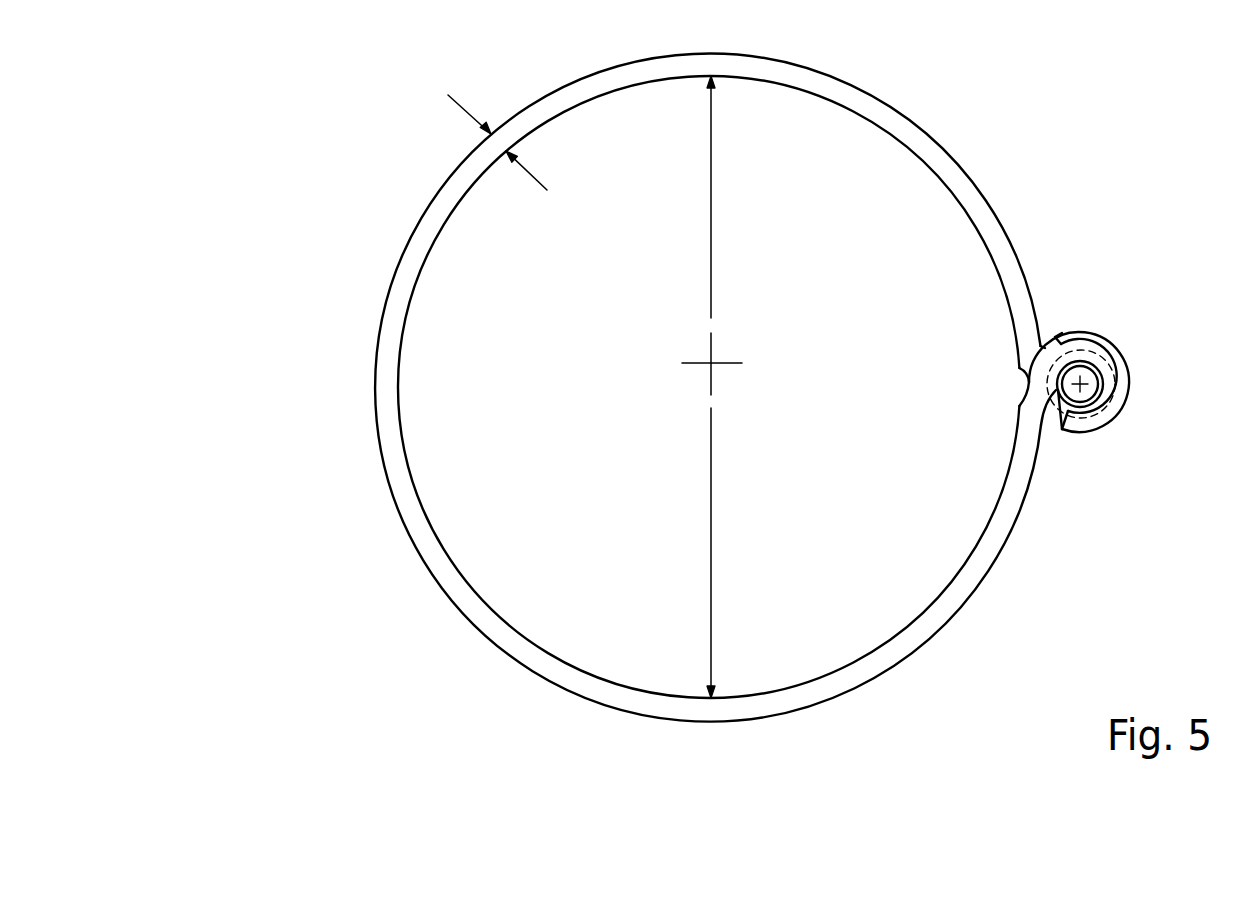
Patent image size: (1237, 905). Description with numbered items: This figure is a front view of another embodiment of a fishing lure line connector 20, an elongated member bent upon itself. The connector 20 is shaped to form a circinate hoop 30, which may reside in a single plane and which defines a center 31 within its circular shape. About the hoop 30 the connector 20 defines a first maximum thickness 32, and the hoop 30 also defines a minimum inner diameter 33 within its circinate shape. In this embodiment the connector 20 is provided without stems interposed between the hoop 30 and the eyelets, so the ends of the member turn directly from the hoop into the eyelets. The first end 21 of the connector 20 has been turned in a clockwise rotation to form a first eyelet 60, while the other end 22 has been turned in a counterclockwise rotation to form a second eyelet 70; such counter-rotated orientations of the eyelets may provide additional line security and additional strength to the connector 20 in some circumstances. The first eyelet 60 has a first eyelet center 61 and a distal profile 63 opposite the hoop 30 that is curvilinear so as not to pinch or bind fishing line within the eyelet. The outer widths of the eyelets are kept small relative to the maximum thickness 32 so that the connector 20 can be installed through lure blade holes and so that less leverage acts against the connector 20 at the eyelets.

The connector 20 is at (275, 190).
The first end 21 is at (1067, 430).
The other end 22 is at (1073, 330).
The circinate hoop 30 is at (437, 567).
The center 31 is at (707, 368).
The first maximum thickness 32 is at (455, 104).
The minimum inner diameter 33 is at (712, 276).
The first eyelet 60 is at (1108, 427).
The first eyelet center 61 is at (1092, 383).
The distal profile 63 is at (1102, 396).
The second eyelet 70 is at (1082, 330).